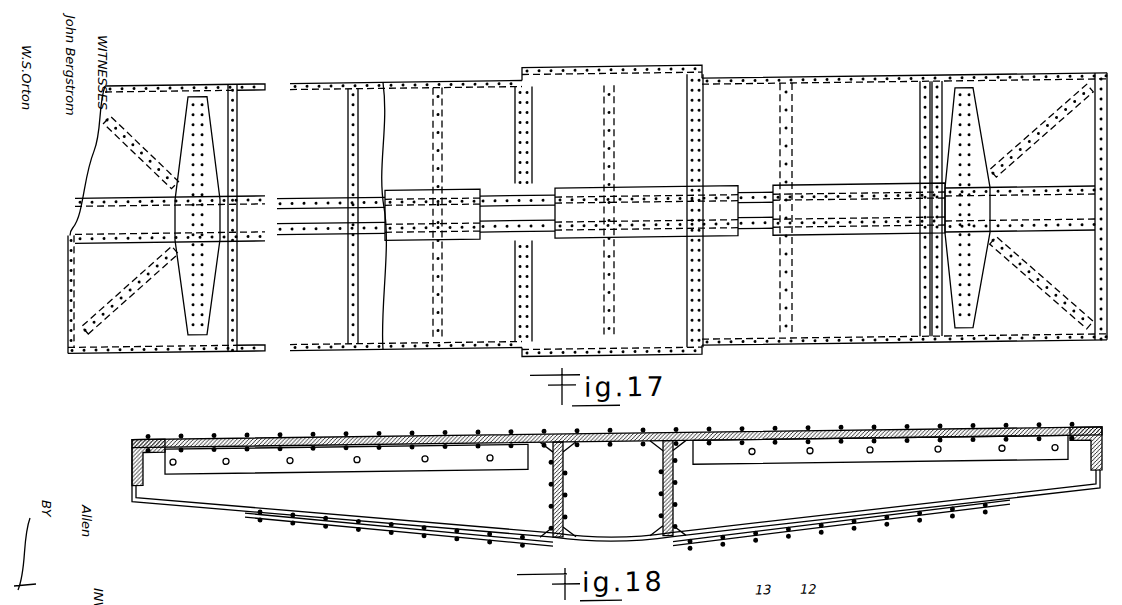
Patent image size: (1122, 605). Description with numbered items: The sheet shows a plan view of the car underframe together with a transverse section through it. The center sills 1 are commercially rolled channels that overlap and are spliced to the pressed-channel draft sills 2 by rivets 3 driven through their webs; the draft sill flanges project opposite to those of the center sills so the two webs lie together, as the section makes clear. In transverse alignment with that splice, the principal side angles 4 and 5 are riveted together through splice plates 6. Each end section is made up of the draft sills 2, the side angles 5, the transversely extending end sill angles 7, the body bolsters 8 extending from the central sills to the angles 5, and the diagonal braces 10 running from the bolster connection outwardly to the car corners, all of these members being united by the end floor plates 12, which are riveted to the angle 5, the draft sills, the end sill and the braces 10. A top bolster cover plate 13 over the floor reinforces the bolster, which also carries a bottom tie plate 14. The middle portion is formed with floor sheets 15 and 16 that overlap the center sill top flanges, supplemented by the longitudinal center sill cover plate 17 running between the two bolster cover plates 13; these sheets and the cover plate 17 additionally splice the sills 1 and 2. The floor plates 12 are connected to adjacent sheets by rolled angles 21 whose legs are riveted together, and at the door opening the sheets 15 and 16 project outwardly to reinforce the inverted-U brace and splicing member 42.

In FIG. 17, the center sill 1 is at (330, 195).
In FIG. 18, the center sill 1 is at (563, 494).
In FIG. 17, the draft sill 2 is at (250, 192).
In FIG. 18, the draft sill 2 is at (553, 496).
In FIG. 18, the rivet 3 is at (566, 462).
In FIG. 17, the principal side angle 4 is at (325, 80).
In FIG. 18, the principal side angle 4 is at (132, 445).
In FIG. 17, the side angle 5 is at (196, 80).
In FIG. 17, the splice plate 6 is at (255, 80).
In FIG. 18, the splice plate 6 is at (143, 459).
In FIG. 17, the end sill angle 7 is at (68, 300).
In FIG. 18, the body bolster 8 is at (620, 489).
In FIG. 17, the diagonal brace 10 is at (138, 140).
In FIG. 17, the floor plate 12 is at (568, 154).
In FIG. 17, the bolster cover plate 13 is at (178, 272).
In FIG. 18, the bolster cover plate 13 is at (276, 434).
In FIG. 18, the bottom tie plate 14 is at (425, 525).
In FIG. 17, the floor sheet 15 is at (643, 133).
In FIG. 18, the floor sheet 15 is at (402, 434).
In FIG. 17, the floor sheet 16 is at (606, 285).
In FIG. 18, the floor sheet 16 is at (903, 434).
In FIG. 17, the center sill cover plate 17 is at (407, 188).
In FIG. 18, the center sill cover plate 17 is at (645, 434).
In FIG. 17, the angle 21 is at (237, 125).
In FIG. 18, the angle 21 is at (374, 469).
In FIG. 17, the brace and splicing member 42 is at (666, 67).